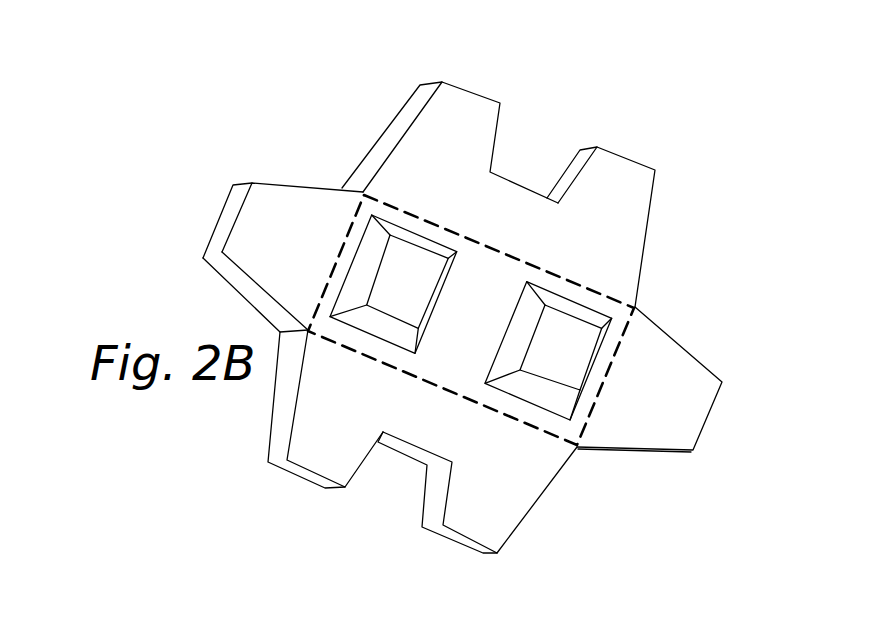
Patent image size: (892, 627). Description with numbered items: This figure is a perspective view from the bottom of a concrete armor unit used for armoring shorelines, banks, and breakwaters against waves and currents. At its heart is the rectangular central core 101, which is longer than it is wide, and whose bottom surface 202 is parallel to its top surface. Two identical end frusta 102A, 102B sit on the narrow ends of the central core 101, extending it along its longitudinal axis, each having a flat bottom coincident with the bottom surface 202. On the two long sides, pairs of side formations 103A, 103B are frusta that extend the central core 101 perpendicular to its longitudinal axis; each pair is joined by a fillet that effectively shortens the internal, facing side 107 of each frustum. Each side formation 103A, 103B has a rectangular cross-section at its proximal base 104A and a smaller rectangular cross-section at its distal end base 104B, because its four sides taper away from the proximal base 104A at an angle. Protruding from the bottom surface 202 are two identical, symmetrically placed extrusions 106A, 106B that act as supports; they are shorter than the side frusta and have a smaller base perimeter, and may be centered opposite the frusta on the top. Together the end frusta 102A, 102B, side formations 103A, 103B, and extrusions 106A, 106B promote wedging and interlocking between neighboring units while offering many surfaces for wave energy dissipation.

The central core 101 is at (355, 213).
The end frustum 102A is at (270, 212).
The end frustum 102B is at (682, 378).
The side formation 103A is at (625, 183).
The side formation 103B is at (425, 123).
The proximal base 104A is at (318, 290).
The distal end base 104B is at (225, 230).
The extrusion 106A is at (357, 290).
The extrusion 106B is at (573, 307).
The internal side 107 is at (434, 500).
The bottom surface 202 is at (492, 283).